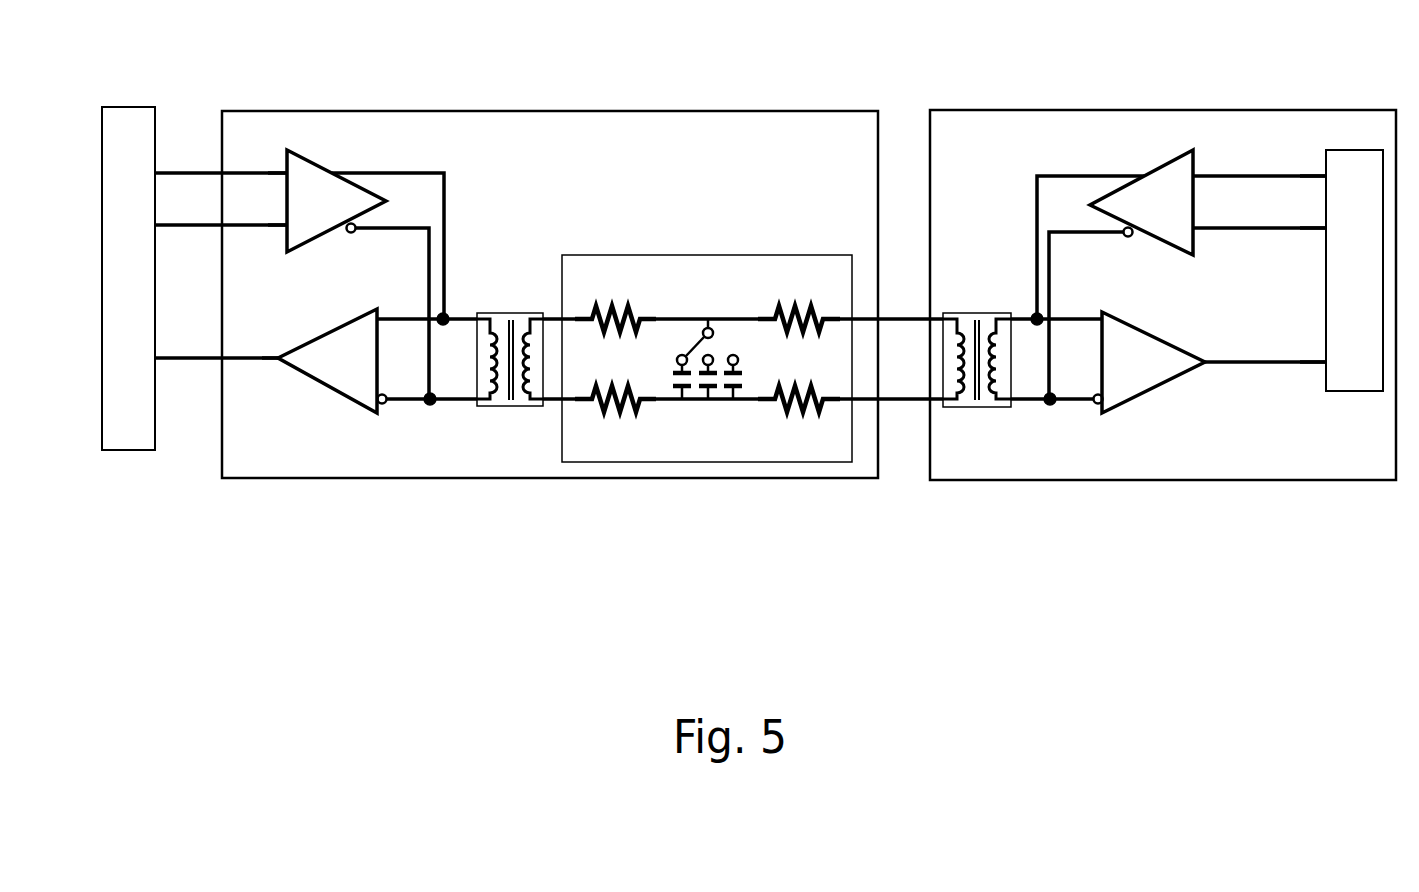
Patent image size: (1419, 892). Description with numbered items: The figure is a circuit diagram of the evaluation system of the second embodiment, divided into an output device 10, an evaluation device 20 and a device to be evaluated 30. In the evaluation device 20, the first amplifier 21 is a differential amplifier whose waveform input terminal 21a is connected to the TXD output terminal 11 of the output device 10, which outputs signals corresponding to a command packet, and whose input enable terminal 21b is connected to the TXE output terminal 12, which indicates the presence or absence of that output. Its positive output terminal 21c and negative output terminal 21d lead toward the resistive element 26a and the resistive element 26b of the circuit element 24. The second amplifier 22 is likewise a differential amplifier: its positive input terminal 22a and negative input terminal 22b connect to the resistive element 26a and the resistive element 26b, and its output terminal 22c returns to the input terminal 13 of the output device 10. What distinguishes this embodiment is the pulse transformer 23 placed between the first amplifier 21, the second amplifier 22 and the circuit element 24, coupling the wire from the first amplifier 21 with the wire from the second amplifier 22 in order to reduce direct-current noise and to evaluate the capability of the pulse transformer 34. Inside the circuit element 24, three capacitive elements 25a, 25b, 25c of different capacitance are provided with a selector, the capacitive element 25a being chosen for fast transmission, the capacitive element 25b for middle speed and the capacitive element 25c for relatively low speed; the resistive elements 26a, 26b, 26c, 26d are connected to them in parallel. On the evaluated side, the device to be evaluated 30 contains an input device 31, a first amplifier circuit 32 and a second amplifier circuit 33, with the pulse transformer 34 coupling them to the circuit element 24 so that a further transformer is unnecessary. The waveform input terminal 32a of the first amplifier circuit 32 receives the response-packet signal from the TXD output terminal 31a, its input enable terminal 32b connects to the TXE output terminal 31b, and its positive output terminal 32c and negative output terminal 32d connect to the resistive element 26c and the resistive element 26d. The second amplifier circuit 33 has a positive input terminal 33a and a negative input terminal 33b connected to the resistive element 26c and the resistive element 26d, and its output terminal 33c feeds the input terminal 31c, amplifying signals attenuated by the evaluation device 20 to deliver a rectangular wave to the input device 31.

The output device 10 is at (141, 106).
The TXD output terminal 11 is at (206, 173).
The TXE output terminal 12 is at (206, 225).
The input terminal 13 is at (201, 358).
The evaluation device 20 is at (556, 109).
The first amplifier 21 is at (336, 201).
The waveform input terminal 21a is at (278, 171).
The input enable terminal 21b is at (258, 232).
The positive output terminal 21c is at (346, 171).
The negative output terminal 21d is at (350, 236).
The second amplifier 22 is at (327, 361).
The positive input terminal 22a is at (403, 315).
The negative input terminal 22b is at (388, 407).
The output terminal 22c is at (278, 354).
The pulse transformer 23 is at (516, 306).
The circuit element 24 is at (714, 253).
The capacitive element 25a is at (707, 410).
The capacitive element 25b is at (708, 377).
The capacitive element 25c is at (733, 377).
The resistive element 26a is at (621, 308).
The resistive element 26b is at (613, 410).
The resistive element 26c is at (806, 308).
The resistive element 26d is at (800, 410).
The device to be evaluated 30 is at (1213, 109).
The input device 31 is at (1363, 416).
The TXD output terminal 31a is at (1335, 176).
The TXE output terminal 31b is at (1335, 227).
The input terminal 31c is at (1334, 361).
The first amplifier circuit 32 is at (1141, 202).
The waveform input terminal 32a is at (1205, 171).
The input enable terminal 32b is at (1205, 235).
The positive output terminal 32c is at (1147, 172).
The negative output terminal 32d is at (1128, 240).
The second amplifier circuit 33 is at (1153, 362).
The positive input terminal 33a is at (1098, 312).
The negative input terminal 33b is at (1090, 408).
The output terminal 33c is at (1218, 356).
The pulse transformer 34 is at (983, 306).